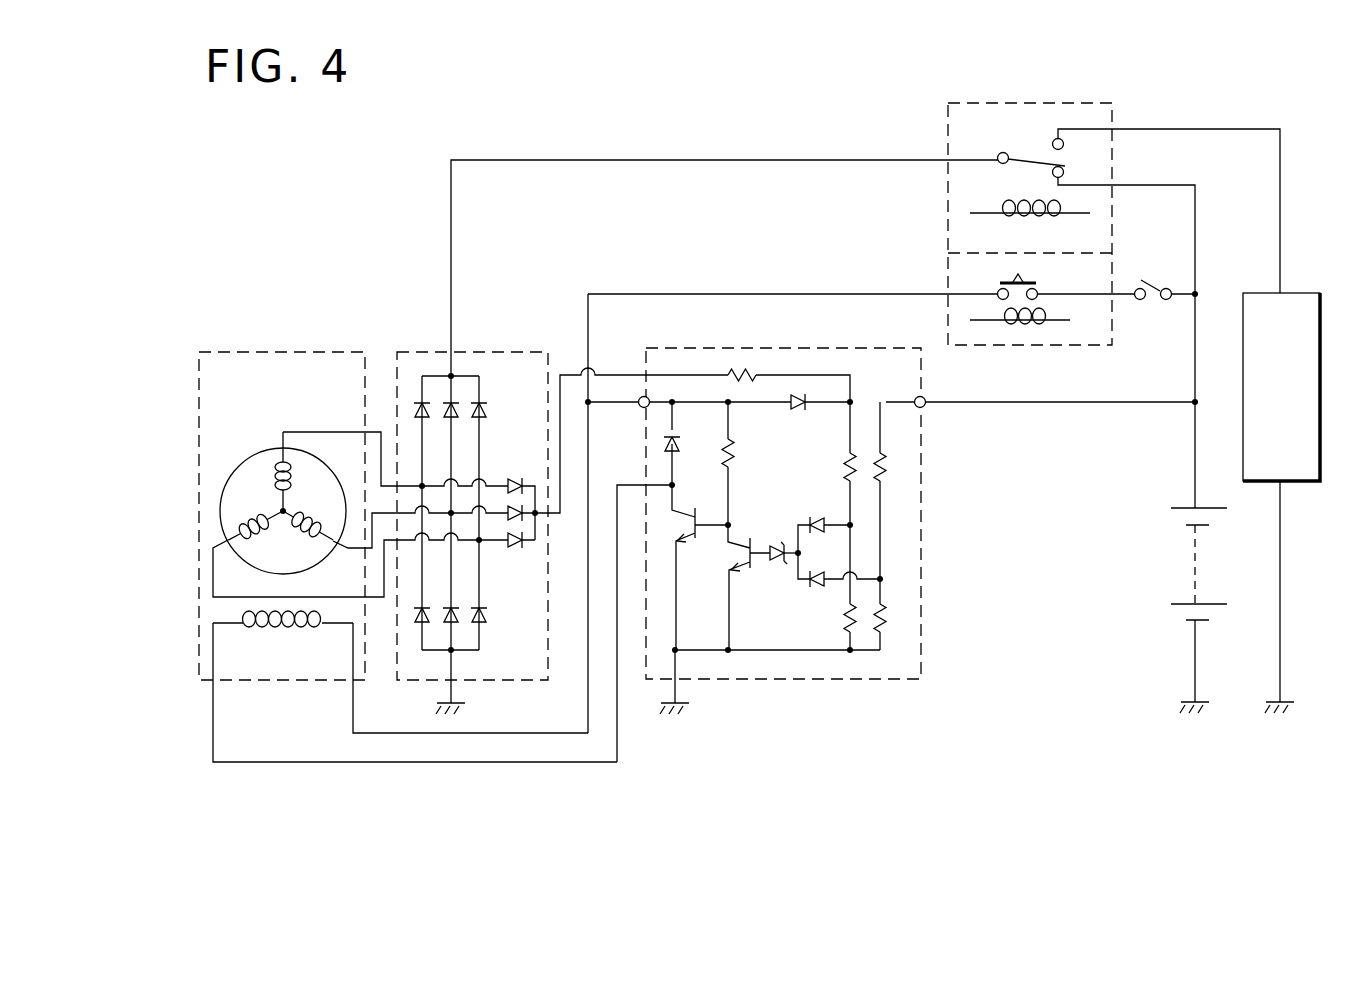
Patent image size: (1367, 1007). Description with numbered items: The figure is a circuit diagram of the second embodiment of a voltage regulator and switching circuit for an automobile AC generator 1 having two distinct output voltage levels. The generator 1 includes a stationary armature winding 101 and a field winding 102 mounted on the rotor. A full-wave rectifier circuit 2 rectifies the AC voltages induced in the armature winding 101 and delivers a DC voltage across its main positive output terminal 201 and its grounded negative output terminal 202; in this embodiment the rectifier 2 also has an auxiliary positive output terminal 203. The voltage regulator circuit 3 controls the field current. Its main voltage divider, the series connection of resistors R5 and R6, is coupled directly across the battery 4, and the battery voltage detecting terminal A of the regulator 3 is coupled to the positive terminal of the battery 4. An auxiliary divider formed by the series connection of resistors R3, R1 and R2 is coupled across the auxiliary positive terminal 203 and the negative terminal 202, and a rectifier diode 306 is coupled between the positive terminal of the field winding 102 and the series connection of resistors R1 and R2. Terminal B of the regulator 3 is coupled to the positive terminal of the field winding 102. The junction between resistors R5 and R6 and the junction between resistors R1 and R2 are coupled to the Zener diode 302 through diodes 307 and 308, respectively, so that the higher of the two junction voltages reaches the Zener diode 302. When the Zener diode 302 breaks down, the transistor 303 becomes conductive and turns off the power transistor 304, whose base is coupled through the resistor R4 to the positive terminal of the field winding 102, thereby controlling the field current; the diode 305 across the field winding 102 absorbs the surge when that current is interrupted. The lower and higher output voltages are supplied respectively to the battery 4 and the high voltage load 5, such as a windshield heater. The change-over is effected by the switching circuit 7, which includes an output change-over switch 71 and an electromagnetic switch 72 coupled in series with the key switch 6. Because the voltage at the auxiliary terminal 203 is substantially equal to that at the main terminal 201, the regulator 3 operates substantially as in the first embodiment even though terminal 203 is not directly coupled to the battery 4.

The AC generator 1 is at (272, 352).
The armature winding 101 is at (265, 468).
The field winding 102 is at (281, 630).
The rectifier circuit 2 is at (477, 352).
The main positive output terminal 201 is at (453, 376).
The negative output terminal 202 is at (455, 650).
The auxiliary positive output terminal 203 is at (535, 510).
The voltage regulator circuit 3 is at (742, 348).
The Zener diode 302 is at (780, 565).
The transistor 303 is at (738, 542).
The power transistor 304 is at (688, 538).
The diode 305 is at (684, 440).
The rectifier diode 306 is at (803, 396).
The diode 307 is at (818, 519).
The diode 308 is at (833, 575).
The resistor R1 is at (834, 503).
The resistor R2 is at (834, 627).
The resistor R3 is at (789, 375).
The resistor R4 is at (748, 463).
The resistor R5 is at (898, 503).
The resistor R6 is at (898, 627).
The battery voltage detecting terminal A is at (925, 407).
The terminal B is at (642, 396).
The battery 4 is at (1188, 566).
The high voltage load 5 is at (1321, 345).
The key switch 6 is at (1148, 303).
The switching circuit 7 is at (948, 120).
The output change-over switch 71 is at (948, 215).
The electromagnetic switch 72 is at (948, 262).